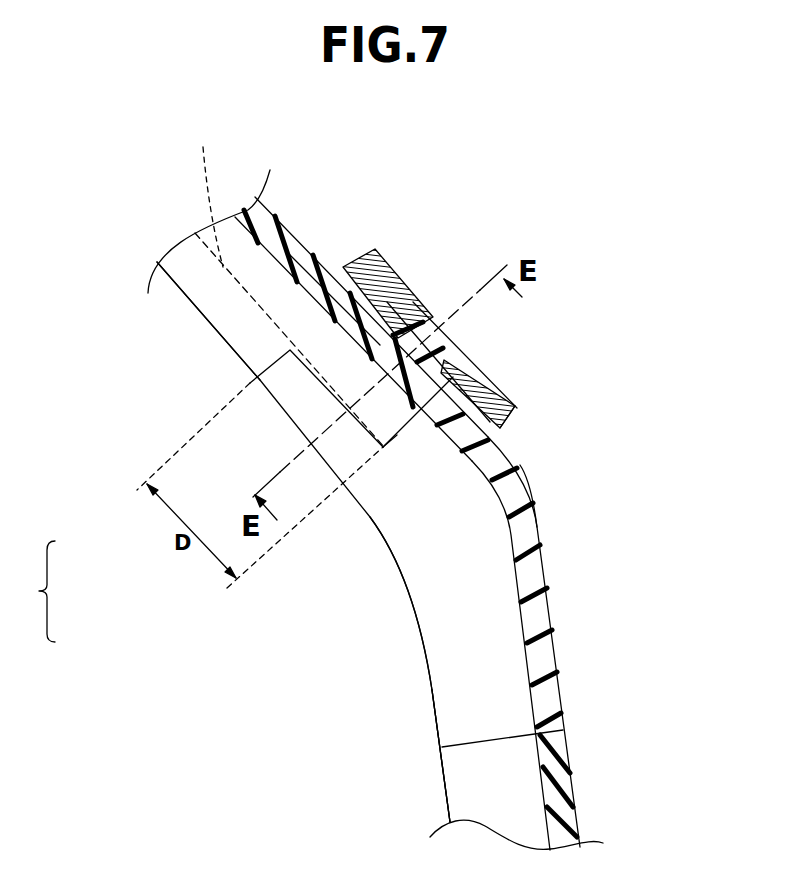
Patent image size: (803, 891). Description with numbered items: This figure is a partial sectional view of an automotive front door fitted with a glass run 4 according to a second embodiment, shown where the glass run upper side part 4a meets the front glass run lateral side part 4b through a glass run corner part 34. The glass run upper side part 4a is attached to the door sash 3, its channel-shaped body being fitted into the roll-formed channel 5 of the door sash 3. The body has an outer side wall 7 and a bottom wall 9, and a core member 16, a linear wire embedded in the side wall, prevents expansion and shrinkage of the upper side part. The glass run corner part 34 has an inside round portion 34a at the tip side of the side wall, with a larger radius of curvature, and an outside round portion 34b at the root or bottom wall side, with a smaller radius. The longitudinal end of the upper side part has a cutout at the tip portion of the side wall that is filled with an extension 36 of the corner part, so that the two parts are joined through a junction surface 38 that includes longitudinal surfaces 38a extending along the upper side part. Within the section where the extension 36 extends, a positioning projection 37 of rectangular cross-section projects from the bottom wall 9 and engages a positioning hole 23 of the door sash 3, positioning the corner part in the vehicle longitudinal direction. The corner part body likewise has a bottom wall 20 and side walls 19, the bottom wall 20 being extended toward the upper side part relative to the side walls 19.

The core member 16 is at (209, 192).
The bottom wall 9 is at (290, 245).
The outer side wall 7 is at (183, 259).
The positioning projection 37 is at (427, 330).
The positioning hole 23 is at (430, 333).
The channel 5 is at (499, 379).
The door sash 3 is at (508, 388).
The extension 36 is at (287, 372).
The junction surface 38 is at (403, 435).
The longitudinal surface 38a is at (370, 427).
The outside round portion 34b is at (538, 494).
The bottom wall 20 is at (560, 607).
The inside round portion 34a is at (383, 547).
The glass run upper side part 4a is at (185, 308).
The glass run 4 is at (37, 591).
The glass run corner part 34 is at (417, 633).
The front glass run lateral side part 4b is at (438, 775).
The side wall 19 is at (450, 677).